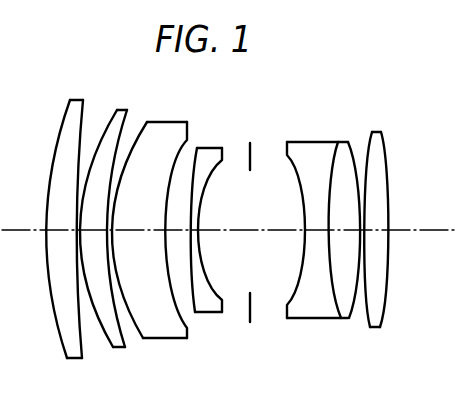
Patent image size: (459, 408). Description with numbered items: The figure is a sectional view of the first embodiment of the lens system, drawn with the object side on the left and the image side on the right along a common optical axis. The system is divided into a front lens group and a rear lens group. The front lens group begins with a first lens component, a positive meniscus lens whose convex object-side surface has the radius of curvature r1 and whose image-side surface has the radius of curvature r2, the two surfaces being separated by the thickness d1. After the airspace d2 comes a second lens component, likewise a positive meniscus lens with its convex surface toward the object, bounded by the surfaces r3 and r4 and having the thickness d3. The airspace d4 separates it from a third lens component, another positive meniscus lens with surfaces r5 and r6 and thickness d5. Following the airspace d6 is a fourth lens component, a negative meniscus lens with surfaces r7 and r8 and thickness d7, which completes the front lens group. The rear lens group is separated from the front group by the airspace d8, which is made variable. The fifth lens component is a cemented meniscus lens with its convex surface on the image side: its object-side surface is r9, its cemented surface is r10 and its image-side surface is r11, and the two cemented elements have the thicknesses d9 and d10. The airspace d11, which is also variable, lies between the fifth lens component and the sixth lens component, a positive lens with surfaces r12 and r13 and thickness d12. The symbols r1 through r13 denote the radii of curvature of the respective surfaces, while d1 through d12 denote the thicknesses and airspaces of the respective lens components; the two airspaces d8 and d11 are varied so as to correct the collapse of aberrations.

The radius of curvature of first surface r1 is at (63, 348).
The radius of curvature of second surface r2 is at (82, 348).
The radius of curvature of third surface r3 is at (113, 340).
The radius of curvature of fourth surface r4 is at (125, 338).
The radius of curvature of fifth surface r5 is at (140, 334).
The radius of curvature of sixth surface r6 is at (186, 313).
The radius of curvature of seventh surface r7 is at (189, 293).
The radius of curvature of eighth surface r8 is at (220, 294).
The radius of curvature of ninth surface r9 is at (285, 303).
The radius of curvature of tenth surface r10 is at (333, 301).
The radius of curvature of eleventh surface r11 is at (357, 303).
The radius of curvature of twelfth surface r12 is at (368, 331).
The radius of curvature of thirteenth surface r13 is at (388, 303).
The thickness of first lens component d1 is at (58, 229).
The airspace between first and second lens components d2 is at (72, 229).
The thickness of second lens component d3 is at (92, 229).
The airspace between second and third lens components d4 is at (110, 229).
The thickness of third lens component d5 is at (138, 229).
The airspace between third and fourth lens components d6 is at (187, 229).
The thickness of fourth lens component d7 is at (217, 165).
The airspace between fourth and fifth lens components d8 is at (245, 229).
The thickness of first element of fifth lens component d9 is at (317, 229).
The thickness of second element of fifth lens component d10 is at (343, 229).
The airspace between fifth and sixth lens components d11 is at (361, 229).
The thickness of sixth lens component d12 is at (386, 218).